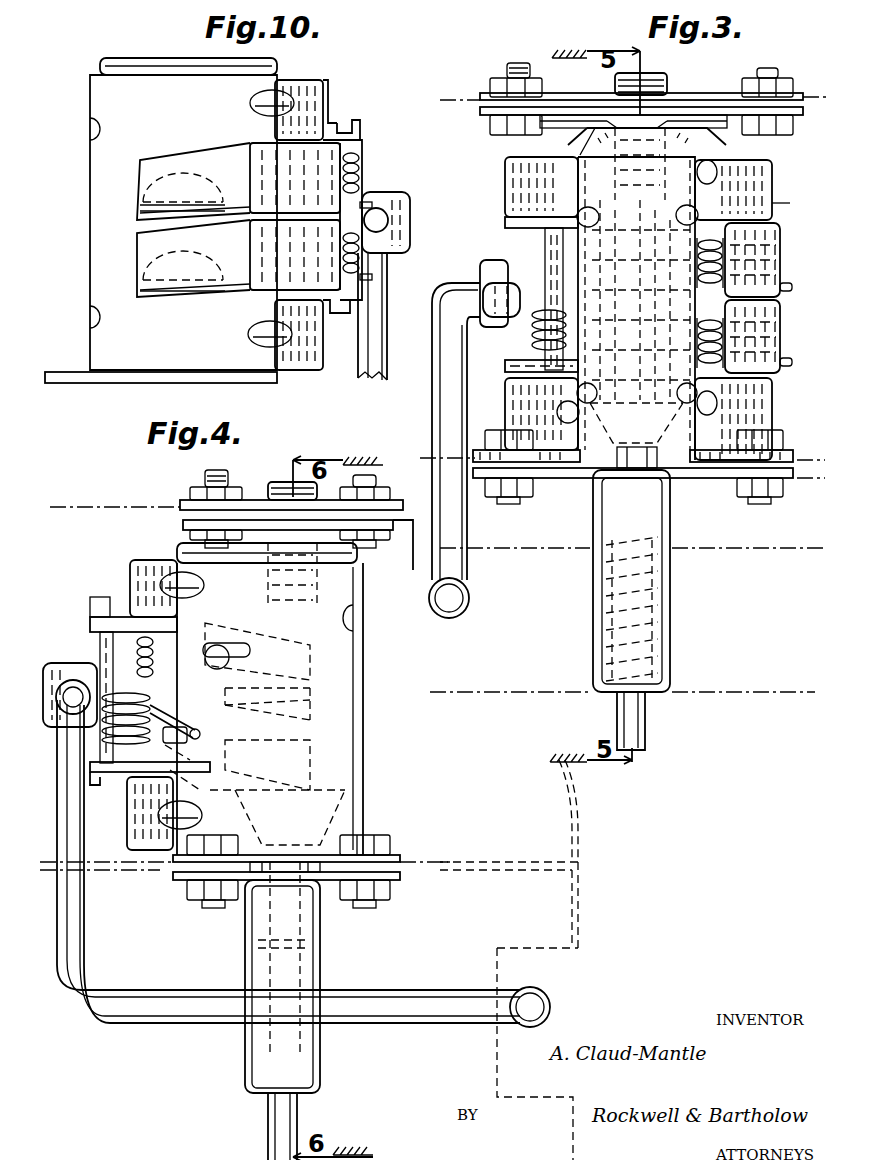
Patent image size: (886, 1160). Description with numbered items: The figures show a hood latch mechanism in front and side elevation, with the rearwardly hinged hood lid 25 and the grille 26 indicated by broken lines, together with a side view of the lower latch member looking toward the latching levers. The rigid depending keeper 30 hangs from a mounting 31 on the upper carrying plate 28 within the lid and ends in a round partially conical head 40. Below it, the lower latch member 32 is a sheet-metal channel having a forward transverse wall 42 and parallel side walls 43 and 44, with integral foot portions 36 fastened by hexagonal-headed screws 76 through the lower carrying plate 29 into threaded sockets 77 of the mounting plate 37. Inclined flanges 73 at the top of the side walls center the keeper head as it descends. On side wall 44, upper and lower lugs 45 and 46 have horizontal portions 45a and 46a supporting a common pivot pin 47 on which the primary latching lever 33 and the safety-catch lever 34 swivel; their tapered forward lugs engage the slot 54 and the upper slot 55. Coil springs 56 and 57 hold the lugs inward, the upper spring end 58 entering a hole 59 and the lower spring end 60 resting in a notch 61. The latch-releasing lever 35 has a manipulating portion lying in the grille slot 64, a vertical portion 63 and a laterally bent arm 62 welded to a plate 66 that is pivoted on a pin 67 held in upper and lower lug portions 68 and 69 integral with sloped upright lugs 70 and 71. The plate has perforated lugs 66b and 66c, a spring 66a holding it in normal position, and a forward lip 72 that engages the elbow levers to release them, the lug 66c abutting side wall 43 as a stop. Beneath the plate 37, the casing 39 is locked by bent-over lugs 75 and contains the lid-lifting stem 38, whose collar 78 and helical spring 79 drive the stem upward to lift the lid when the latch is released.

In FIG. 4, the hood lid 25 is at (580, 815).
In FIG. 3, the grille 26 is at (757, 693).
In FIG. 4, the grille 26 is at (580, 920).
In FIG. 3, the upper carrying plate 28 is at (455, 100).
In FIG. 4, the upper carrying plate 28 is at (86, 508).
In FIG. 3, the lower carrying plate 29 is at (813, 478).
In FIG. 4, the lower carrying plate 29 is at (140, 868).
In FIG. 3, the keeper 30 is at (665, 82).
In FIG. 4, the keeper 30 is at (277, 482).
In FIG. 3, the keeper mounting 31 is at (502, 112).
In FIG. 4, the keeper mounting 31 is at (193, 517).
In FIG. 10, the lower latch member 32 is at (202, 122).
In FIG. 3, the lower latch member 32 is at (592, 449).
In FIG. 4, the lower latch member 32 is at (364, 689).
In FIG. 10, the primary latching lever 33 is at (238, 262).
In FIG. 3, the primary latching lever 33 is at (773, 333).
In FIG. 4, the primary latching lever 33 is at (308, 712).
In FIG. 10, the safety-catch lever 34 is at (238, 182).
In FIG. 3, the safety-catch lever 34 is at (767, 268).
In FIG. 4, the safety-catch lever 34 is at (232, 624).
In FIG. 10, the latch-releasing lever 35 is at (379, 325).
In FIG. 3, the latch-releasing lever 35 is at (462, 594).
In FIG. 4, the latch-releasing lever 35 is at (182, 998).
In FIG. 10, the foot portions 36 is at (110, 381).
In FIG. 3, the foot portions 36 is at (497, 462).
In FIG. 4, the foot portions 36 is at (357, 860).
In FIG. 3, the mounting plate 37 is at (712, 472).
In FIG. 4, the mounting plate 37 is at (373, 878).
In FIG. 3, the lid-lifting stem 38 is at (633, 713).
In FIG. 4, the lid-lifting stem 38 is at (310, 930).
In FIG. 3, the casing 39 is at (662, 608).
In FIG. 4, the casing 39 is at (307, 972).
In FIG. 3, the keeper head 40 is at (610, 435).
In FIG. 4, the keeper head 40 is at (360, 810).
In FIG. 10, the transverse wall 42 is at (90, 238).
In FIG. 3, the transverse wall 42 is at (680, 188).
In FIG. 4, the transverse wall 42 is at (360, 750).
In FIG. 4, the side wall 43 is at (337, 767).
In FIG. 10, the side wall 44 is at (177, 354).
In FIG. 10, the upper lug 45 is at (324, 110).
In FIG. 3, the upper lug 45 is at (772, 163).
In FIG. 10, the horizontal portion of upper lug 45a is at (360, 138).
In FIG. 10, the lower lug 46 is at (312, 368).
In FIG. 3, the lower lug 46 is at (770, 402).
In FIG. 10, the horizontal portion of lower lug 46a is at (350, 303).
In FIG. 10, the pivot pin 47 is at (341, 127).
In FIG. 3, the pivot pin 47 is at (776, 205).
In FIG. 10, the slot 54 is at (217, 292).
In FIG. 4, the slot 54 is at (270, 770).
In FIG. 10, the upper slot 55 is at (136, 212).
In FIG. 4, the upper slot 55 is at (267, 680).
In FIG. 10, the upper spring coil 56 is at (362, 168).
In FIG. 3, the upper spring coil 56 is at (787, 232).
In FIG. 10, the lower spring coil 57 is at (350, 268).
In FIG. 3, the lower spring coil 57 is at (758, 323).
In FIG. 4, the extended end of upper spring 58 is at (218, 650).
In FIG. 4, the hole 59 is at (220, 640).
In FIG. 4, the end portion of lower spring 60 is at (199, 729).
In FIG. 4, the notch 61 is at (177, 757).
In FIG. 10, the laterally bent arm 62 is at (380, 213).
In FIG. 3, the laterally bent arm 62 is at (497, 290).
In FIG. 3, the vertical portion 63 is at (434, 428).
In FIG. 4, the vertical portion 63 is at (75, 925).
In FIG. 3, the grille slot 64 is at (543, 628).
In FIG. 4, the grille slot 64 is at (525, 950).
In FIG. 10, the plate 66 is at (404, 224).
In FIG. 3, the plate 66 is at (482, 270).
In FIG. 4, the plate 66 is at (70, 668).
In FIG. 3, the spring 66a is at (571, 309).
In FIG. 4, the spring 66a is at (190, 745).
In FIG. 3, the upper lug 66b is at (517, 223).
In FIG. 4, the upper lug 66b is at (90, 623).
In FIG. 3, the lower lug 66c is at (516, 367).
In FIG. 4, the lower lug 66c is at (212, 770).
In FIG. 3, the pivot pin 67 is at (548, 250).
In FIG. 4, the pivot pin 67 is at (122, 748).
In FIG. 4, the upper lug portion 68 is at (97, 613).
In FIG. 4, the lower lug portion 69 is at (93, 777).
In FIG. 3, the upright lug 70 is at (520, 182).
In FIG. 4, the upright lug 70 is at (130, 573).
In FIG. 3, the upright lug 71 is at (512, 400).
In FIG. 4, the upright lug 71 is at (140, 828).
In FIG. 3, the upright lip 72 is at (636, 267).
In FIG. 4, the upright lip 72 is at (110, 597).
In FIG. 10, the flanges 73 is at (130, 67).
In FIG. 3, the flanges 73 is at (705, 160).
In FIG. 4, the flanges 73 is at (180, 551).
In FIG. 3, the lugs 75 is at (633, 472).
In FIG. 4, the lugs 75 is at (283, 872).
In FIG. 3, the fastening screws 76 is at (770, 450).
In FIG. 4, the fastening screws 76 is at (390, 847).
In FIG. 3, the threaded sockets 77 is at (752, 490).
In FIG. 4, the threaded sockets 77 is at (370, 903).
In FIG. 3, the collar 78 is at (608, 533).
In FIG. 3, the helical spring 79 is at (657, 647).